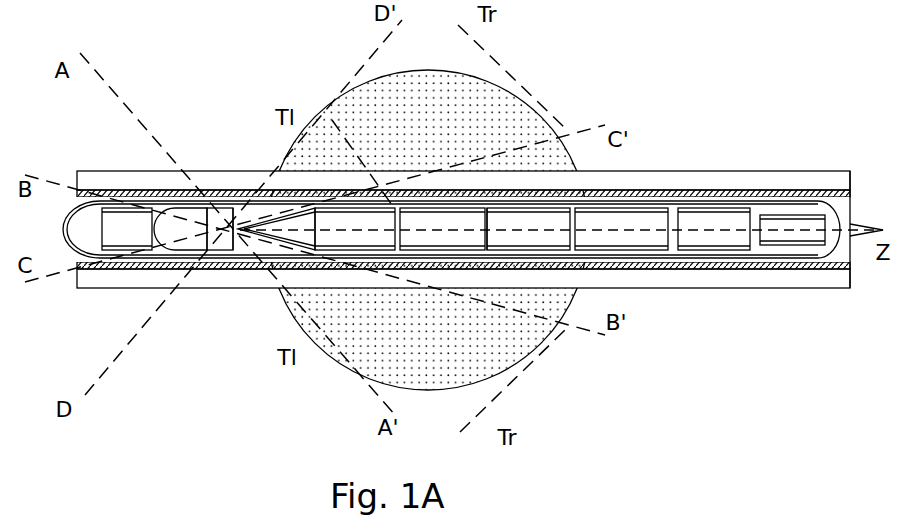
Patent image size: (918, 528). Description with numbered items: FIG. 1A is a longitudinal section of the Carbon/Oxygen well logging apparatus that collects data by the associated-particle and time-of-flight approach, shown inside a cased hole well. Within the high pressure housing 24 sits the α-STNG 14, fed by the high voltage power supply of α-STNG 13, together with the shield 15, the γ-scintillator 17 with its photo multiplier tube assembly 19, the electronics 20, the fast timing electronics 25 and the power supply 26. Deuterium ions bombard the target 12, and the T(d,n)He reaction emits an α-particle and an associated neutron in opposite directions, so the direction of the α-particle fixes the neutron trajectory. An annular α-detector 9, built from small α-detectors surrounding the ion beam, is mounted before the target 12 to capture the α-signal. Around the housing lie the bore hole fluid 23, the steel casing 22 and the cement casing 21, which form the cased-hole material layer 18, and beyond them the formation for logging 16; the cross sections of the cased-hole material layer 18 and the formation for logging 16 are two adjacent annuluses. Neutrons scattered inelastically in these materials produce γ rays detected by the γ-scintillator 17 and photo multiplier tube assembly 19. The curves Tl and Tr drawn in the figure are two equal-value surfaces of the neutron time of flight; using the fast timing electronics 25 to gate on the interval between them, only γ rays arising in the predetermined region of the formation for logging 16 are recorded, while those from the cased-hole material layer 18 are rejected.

The α-detector 9 is at (200, 207).
The target 12 is at (237, 210).
The high voltage power supply of α-STNG 13 is at (113, 248).
The α-STNG 14 is at (138, 252).
The shield 15 is at (337, 210).
The formation for logging 16 is at (403, 110).
The γ-scintillator 17 is at (433, 217).
The cased-hole material layer 18 is at (481, 208).
The photo multiplier tube assembly 19 is at (550, 217).
The electronics 20 is at (636, 250).
The cement casing 21 is at (660, 182).
The steel casing 22 is at (672, 263).
The bore hole fluid 23 is at (735, 258).
The high pressure housing 24 is at (788, 255).
The fast timing electronics 25 is at (708, 218).
The power supply 26 is at (782, 222).